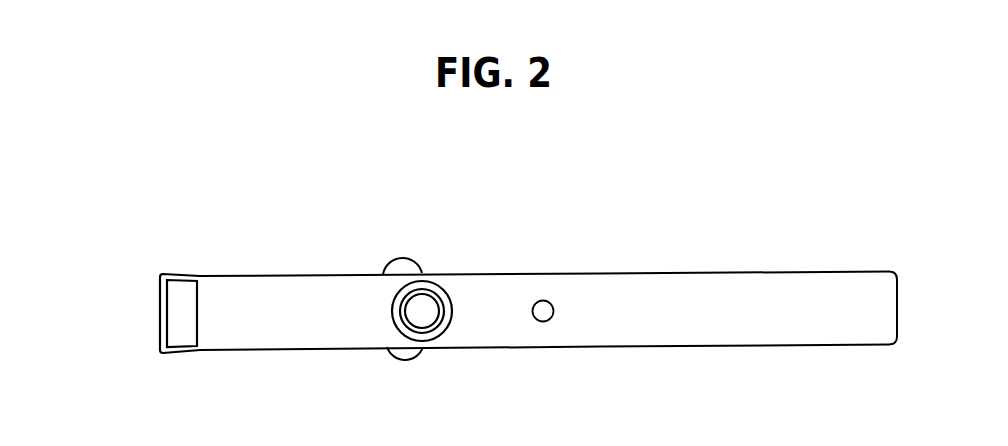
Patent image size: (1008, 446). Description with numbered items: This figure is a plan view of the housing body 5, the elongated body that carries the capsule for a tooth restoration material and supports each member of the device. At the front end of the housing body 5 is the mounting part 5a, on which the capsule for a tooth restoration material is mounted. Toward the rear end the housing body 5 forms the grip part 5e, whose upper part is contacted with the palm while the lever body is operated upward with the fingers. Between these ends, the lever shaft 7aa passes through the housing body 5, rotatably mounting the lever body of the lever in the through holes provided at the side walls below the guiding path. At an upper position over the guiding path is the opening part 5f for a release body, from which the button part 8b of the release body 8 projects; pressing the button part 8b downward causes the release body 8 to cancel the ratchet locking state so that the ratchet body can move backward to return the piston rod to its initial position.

The housing body 5 is at (485, 299).
The mounting part 5a is at (161, 319).
The grip part 5e is at (660, 318).
The opening part for a release body 5f is at (426, 318).
The lever shaft 7aa is at (402, 266).
The release body 8 is at (428, 355).
The button part 8b is at (428, 322).